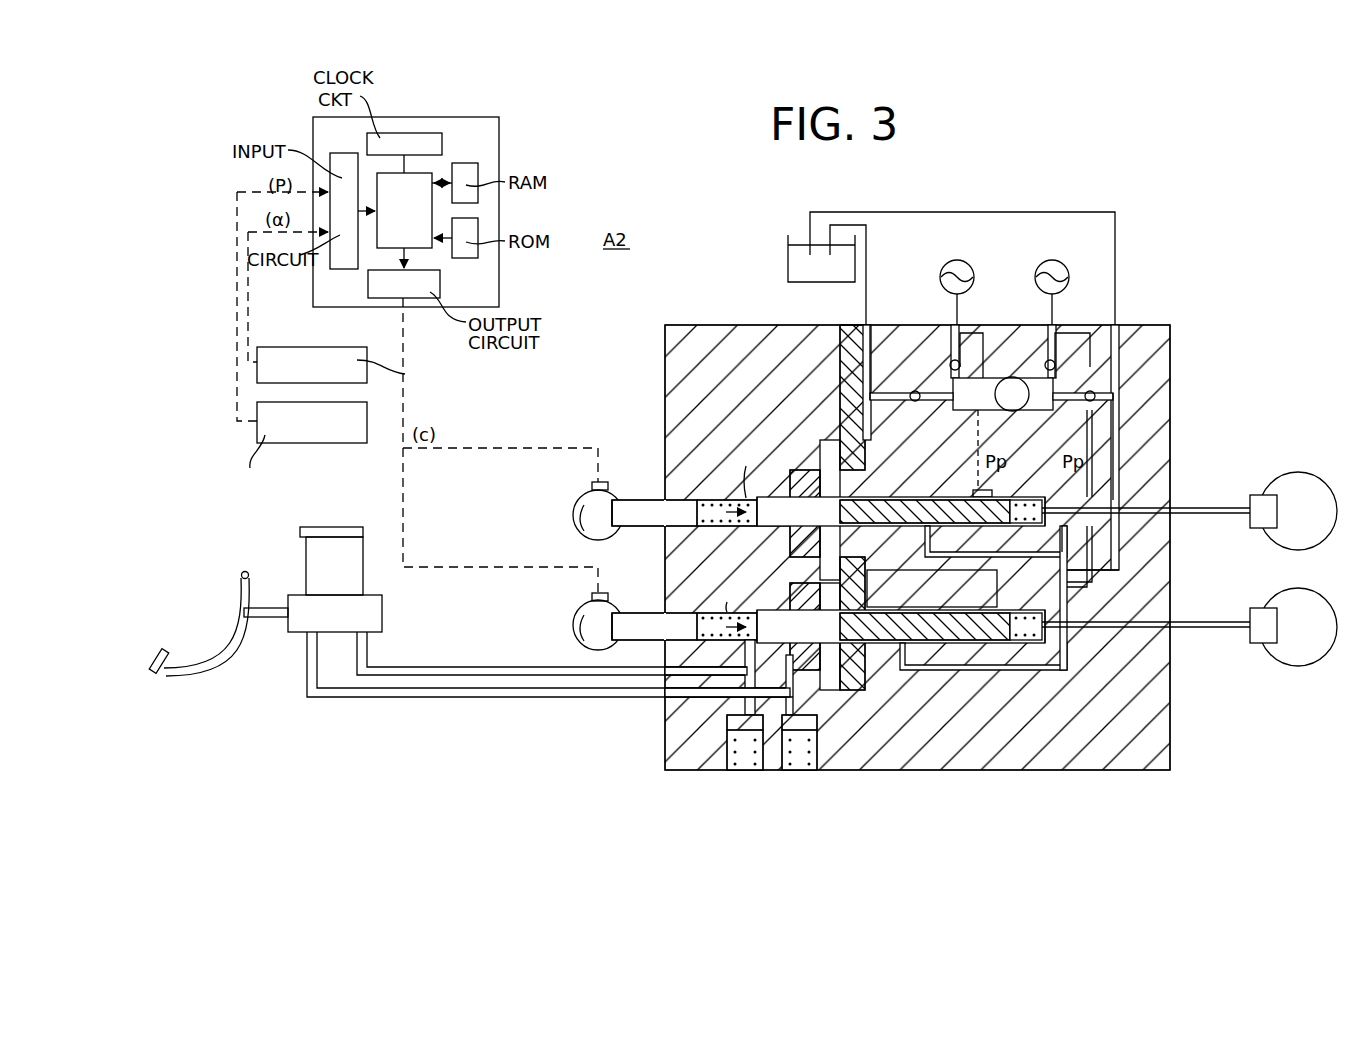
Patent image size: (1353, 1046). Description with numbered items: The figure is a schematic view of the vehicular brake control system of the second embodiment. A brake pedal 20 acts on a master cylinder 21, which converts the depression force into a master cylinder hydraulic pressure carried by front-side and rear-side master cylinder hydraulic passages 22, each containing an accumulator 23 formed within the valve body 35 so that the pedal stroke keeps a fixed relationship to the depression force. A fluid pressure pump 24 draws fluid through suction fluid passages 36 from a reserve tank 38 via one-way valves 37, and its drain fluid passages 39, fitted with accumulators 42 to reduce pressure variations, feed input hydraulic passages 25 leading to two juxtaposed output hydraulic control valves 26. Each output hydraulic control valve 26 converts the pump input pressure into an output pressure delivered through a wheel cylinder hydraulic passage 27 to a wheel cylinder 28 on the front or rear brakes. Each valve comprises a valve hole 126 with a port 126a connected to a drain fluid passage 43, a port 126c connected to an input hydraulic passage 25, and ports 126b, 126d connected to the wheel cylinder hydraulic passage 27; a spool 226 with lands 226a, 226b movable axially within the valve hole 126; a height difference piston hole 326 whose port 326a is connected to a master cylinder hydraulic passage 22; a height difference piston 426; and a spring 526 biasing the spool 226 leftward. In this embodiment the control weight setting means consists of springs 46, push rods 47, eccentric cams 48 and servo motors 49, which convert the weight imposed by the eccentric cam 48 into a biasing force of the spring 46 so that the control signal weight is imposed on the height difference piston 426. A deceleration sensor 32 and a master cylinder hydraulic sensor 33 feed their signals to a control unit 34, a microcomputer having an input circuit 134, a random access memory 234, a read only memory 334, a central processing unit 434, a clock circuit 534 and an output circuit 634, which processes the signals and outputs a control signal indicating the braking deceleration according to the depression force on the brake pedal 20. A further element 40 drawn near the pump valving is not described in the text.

The brake pedal 20 is at (160, 650).
The master cylinder 21 is at (368, 588).
The master cylinder hydraulic passage 22 is at (500, 666).
The accumulator 23 is at (740, 774).
The fluid pressure pump 24 is at (1003, 374).
The input hydraulic passage 25 is at (1065, 440).
The output hydraulic control valve 26 is at (925, 481).
The wheel cylinder hydraulic passage 27 is at (1183, 495).
The wheel cylinder 28 is at (1258, 495).
The deceleration sensor 32 is at (368, 347).
The master cylinder hydraulic sensor 33 is at (358, 443).
The control unit 34 is at (500, 137).
The valve body 35 is at (880, 772).
The suction fluid passage 36 is at (912, 392).
The one-way valve 37 is at (925, 402).
The reserve tank 38 is at (788, 272).
The drain fluid passage 39 is at (950, 342).
The ball 40 is at (950, 364).
The accumulator 42 is at (966, 264).
The drain fluid passage 43 is at (880, 430).
The spring 46 is at (710, 498).
The push rod 47 is at (676, 498).
The eccentric cam 48 is at (582, 512).
The servo motor 49 is at (612, 528).
The valve hole 126 is at (940, 497).
The port 126a is at (905, 497).
The port 126b is at (1140, 556).
The port 126c is at (1100, 456).
The port 126d is at (1140, 530).
The input circuit 134 is at (342, 155).
The spool 226 is at (965, 497).
The land 226a is at (1130, 515).
The land 226b is at (1130, 545).
The RAM 234 is at (468, 165).
The height difference piston hole 326 is at (678, 512).
The port 326a is at (685, 613).
The ROM 334 is at (462, 258).
The height difference piston 426 is at (786, 470).
The CPU 434 is at (430, 175).
The spring 526 is at (1025, 500).
The clock circuit 534 is at (378, 140).
The output circuit 634 is at (368, 280).